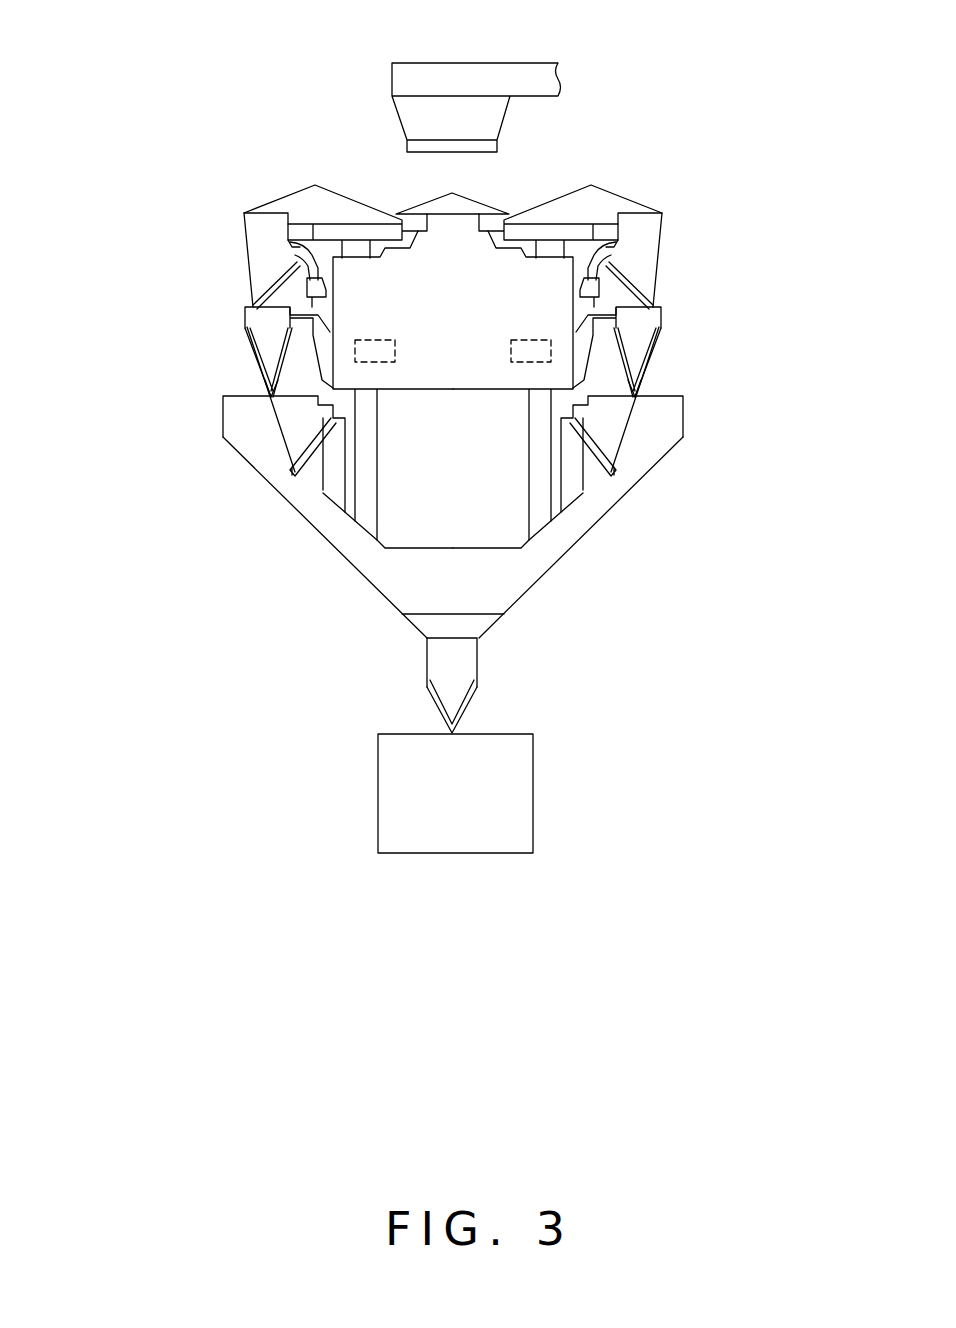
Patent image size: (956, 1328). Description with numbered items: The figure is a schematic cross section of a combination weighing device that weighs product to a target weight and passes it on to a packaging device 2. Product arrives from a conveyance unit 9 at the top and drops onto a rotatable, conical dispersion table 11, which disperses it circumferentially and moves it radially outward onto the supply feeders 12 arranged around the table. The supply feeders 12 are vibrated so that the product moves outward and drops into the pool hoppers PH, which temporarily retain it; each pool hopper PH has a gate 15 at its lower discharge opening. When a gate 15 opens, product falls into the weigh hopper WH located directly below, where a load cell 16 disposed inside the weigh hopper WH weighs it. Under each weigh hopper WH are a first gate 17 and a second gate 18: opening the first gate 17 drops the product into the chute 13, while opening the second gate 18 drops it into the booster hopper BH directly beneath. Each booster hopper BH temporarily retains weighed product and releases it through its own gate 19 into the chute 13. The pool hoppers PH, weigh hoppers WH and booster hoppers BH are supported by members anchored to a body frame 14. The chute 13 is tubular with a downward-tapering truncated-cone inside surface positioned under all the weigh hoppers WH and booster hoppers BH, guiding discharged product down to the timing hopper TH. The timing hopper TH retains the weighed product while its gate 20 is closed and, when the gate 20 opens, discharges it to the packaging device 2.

The packaging device 2 is at (503, 780).
The conveyance unit 9 is at (381, 123).
The dispersion table 11 is at (481, 203).
The supply feeders 12 is at (279, 185).
The chute 13 is at (592, 529).
The body frame 14 is at (409, 376).
The gate 15 is at (254, 299).
The load cell 16 is at (372, 338).
The first gate 17 is at (260, 375).
The second gate 18 is at (290, 358).
The gate 19 is at (305, 450).
The gate 20 is at (470, 706).
The pool hopper PH is at (260, 241).
The weigh hopper WH is at (268, 332).
The booster hopper BH is at (288, 430).
The timing hopper TH is at (457, 662).